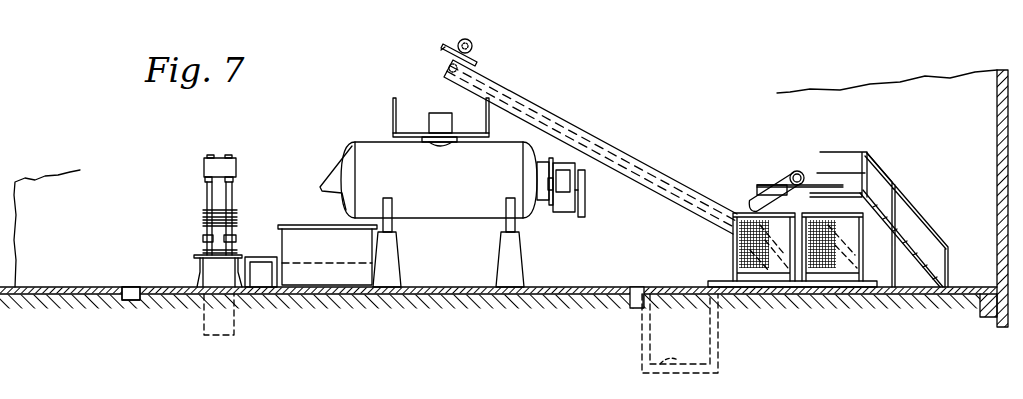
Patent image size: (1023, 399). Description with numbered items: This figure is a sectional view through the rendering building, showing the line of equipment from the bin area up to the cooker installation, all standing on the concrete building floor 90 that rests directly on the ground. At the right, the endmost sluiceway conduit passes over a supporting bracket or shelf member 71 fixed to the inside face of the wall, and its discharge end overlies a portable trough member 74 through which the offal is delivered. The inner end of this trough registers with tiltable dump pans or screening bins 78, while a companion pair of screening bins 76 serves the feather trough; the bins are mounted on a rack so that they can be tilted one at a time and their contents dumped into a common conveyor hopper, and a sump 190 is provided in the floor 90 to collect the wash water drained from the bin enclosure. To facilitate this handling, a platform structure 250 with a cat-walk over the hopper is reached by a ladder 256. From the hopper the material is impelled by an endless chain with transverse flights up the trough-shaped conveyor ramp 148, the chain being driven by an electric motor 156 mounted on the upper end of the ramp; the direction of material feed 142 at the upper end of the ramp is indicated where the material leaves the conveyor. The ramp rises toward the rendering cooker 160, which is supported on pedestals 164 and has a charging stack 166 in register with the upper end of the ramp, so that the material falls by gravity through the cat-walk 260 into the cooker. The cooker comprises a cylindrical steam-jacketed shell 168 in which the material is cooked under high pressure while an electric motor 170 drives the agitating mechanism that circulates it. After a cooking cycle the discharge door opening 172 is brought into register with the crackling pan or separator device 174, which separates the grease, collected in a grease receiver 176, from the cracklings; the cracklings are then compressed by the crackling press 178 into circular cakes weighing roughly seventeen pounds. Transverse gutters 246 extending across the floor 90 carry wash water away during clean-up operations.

The supporting bracket or shelf member 71 is at (764, 182).
The portable trough member 74 is at (751, 195).
The tiltable dump pans or screening bins 76 is at (847, 247).
The tiltable dump pans or screening bins 78 is at (743, 257).
The building floor 90 is at (561, 286).
The material feed 142 is at (437, 51).
The conveyor ramp 148 is at (670, 175).
The electric motor 156 is at (474, 45).
The rendering cooker 160 is at (447, 183).
The pedestals 164 is at (393, 264).
The charging stack 166 is at (445, 122).
The cylindrical steam-jacketed shell 168 is at (369, 146).
The electric motor 170 is at (563, 183).
The discharge door opening 172 is at (336, 190).
The crackling pan or separator device 174 is at (342, 270).
The grease receiver 176 is at (262, 278).
The crackling press 178 is at (200, 228).
The sump 190 is at (672, 371).
The transverse gutters 246 is at (115, 298).
The platform structure 250 is at (890, 163).
The ladder 256 is at (904, 233).
The cat-walk 260 is at (831, 194).